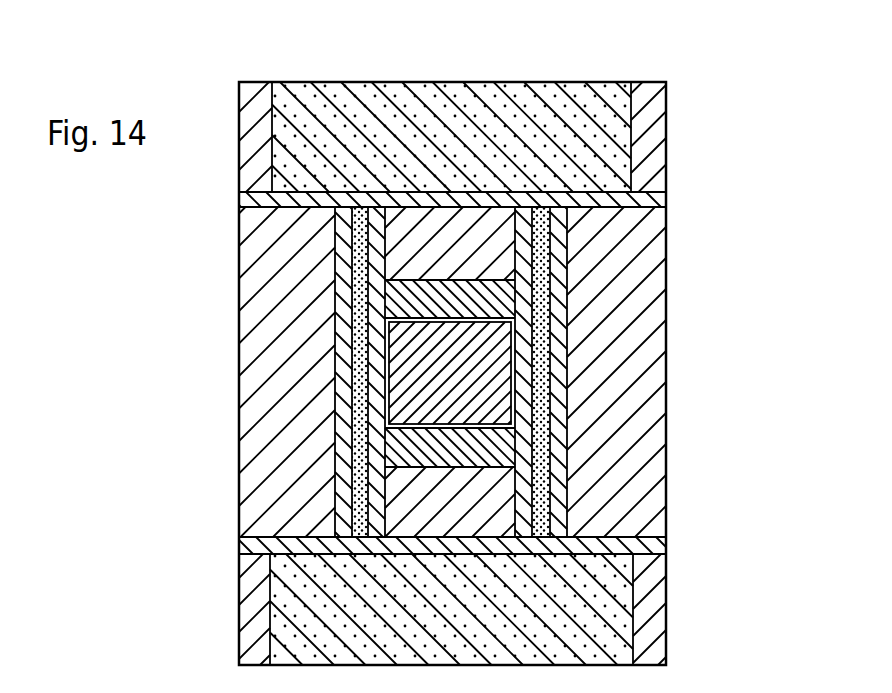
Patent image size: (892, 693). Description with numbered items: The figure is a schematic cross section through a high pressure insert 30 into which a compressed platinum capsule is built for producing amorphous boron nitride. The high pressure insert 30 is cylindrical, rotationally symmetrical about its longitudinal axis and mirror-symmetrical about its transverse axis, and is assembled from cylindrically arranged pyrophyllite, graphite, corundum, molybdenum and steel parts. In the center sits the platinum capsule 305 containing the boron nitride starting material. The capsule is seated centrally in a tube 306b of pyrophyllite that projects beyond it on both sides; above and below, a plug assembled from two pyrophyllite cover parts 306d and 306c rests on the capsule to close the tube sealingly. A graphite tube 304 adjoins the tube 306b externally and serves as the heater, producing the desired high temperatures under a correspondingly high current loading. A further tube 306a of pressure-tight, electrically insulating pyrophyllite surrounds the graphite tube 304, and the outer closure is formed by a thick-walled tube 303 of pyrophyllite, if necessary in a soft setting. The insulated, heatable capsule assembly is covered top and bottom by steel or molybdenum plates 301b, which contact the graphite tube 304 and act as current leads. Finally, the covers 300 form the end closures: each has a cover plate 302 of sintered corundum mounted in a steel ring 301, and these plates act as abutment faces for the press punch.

The high pressure insert 30 is at (578, 68).
The cover 300 is at (677, 84).
The steel ring 301 is at (252, 98).
The cover plate 302 is at (367, 97).
The steel or molybdenum plate 301b is at (258, 200).
The thick-walled tube 303 is at (250, 285).
The graphite tube 304 is at (360, 334).
The platinum capsule 305 is at (417, 371).
The tube 306a is at (342, 437).
The tube 306b is at (376, 482).
The cover part 306c is at (478, 240).
The cover part 306d is at (482, 297).